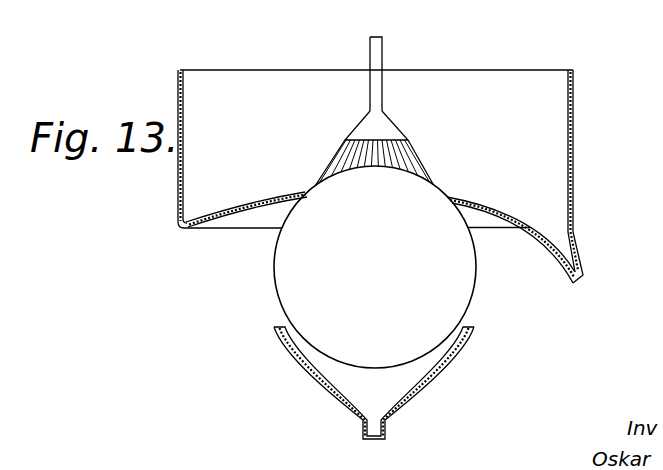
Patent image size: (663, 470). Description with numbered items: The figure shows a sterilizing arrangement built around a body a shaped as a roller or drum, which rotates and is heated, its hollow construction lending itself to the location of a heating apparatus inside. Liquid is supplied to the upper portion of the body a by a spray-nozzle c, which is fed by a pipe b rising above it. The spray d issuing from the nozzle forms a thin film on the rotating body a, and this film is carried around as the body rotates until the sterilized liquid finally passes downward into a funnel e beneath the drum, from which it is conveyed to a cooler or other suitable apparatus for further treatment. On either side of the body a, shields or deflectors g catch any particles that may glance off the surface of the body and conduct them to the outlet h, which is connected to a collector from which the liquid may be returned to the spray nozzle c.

The body a is at (472, 255).
The pipe b is at (382, 48).
The spray-nozzle c is at (388, 126).
The spray d is at (413, 152).
The funnel e is at (432, 367).
The shields or deflectors g is at (240, 210).
The outlet h is at (578, 259).